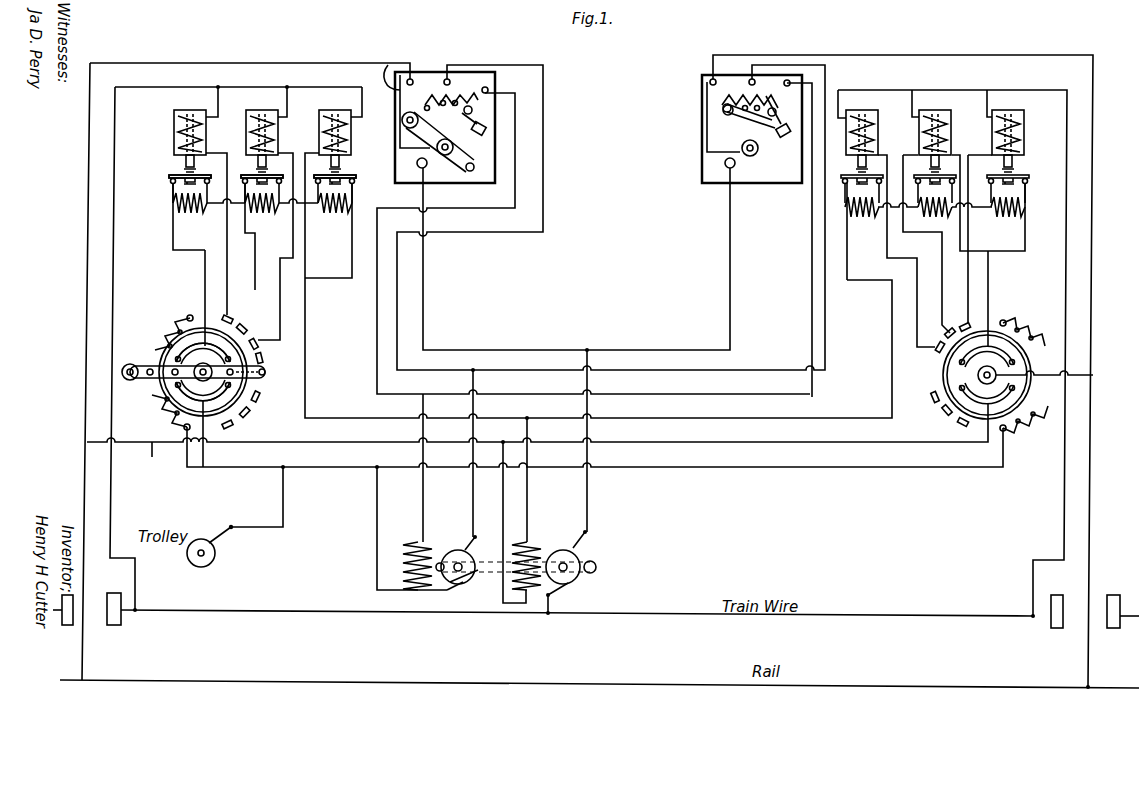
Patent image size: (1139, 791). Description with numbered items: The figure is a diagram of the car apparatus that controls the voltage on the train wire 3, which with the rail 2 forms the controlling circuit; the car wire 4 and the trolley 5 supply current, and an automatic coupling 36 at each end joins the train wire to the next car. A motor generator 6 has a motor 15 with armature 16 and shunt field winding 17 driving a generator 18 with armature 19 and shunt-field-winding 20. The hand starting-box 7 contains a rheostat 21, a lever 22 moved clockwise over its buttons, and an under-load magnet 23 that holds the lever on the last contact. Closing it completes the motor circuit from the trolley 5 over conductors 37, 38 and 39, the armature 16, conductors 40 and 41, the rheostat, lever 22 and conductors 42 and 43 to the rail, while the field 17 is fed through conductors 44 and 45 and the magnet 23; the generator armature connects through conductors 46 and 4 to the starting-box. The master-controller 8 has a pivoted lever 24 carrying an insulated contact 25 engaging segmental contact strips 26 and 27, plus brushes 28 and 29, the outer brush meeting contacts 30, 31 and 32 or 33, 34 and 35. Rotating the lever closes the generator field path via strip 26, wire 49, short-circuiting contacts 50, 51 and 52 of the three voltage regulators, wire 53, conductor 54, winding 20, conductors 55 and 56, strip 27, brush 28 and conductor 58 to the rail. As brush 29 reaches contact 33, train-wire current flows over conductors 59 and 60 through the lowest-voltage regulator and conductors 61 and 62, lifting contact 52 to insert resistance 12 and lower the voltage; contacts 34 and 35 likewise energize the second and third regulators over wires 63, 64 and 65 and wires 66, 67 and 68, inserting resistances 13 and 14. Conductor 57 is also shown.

The rail 2 is at (599, 673).
The train wire 3 is at (578, 606).
The car wire 4 is at (576, 260).
The trolley 5 is at (214, 546).
The motor generator 6 is at (513, 551).
The hand starting-box 7 is at (440, 75).
The master-controller 8 is at (578, 357).
The resistance 12 is at (335, 216).
The resistance 13 is at (262, 216).
The resistance 14 is at (190, 216).
The motor 15 is at (432, 542).
The armature 16 is at (456, 592).
The shunt field winding 17 is at (428, 166).
The generator 18 is at (572, 548).
The armature 19 is at (596, 562).
The shunt-field-winding 20 is at (532, 545).
The rheostat 21 is at (452, 82).
The lever 22 is at (588, 138).
The automatic release or under-load magnet 23 is at (626, 128).
The pivoted lever 24 is at (136, 362).
The insulated contact 25 is at (150, 380).
The segmental contact strip 26 is at (171, 329).
The segmental contact strip 27 is at (164, 417).
The brush 28 is at (203, 391).
The brush 29 is at (267, 373).
The contact 30 is at (262, 341).
The contact 31 is at (244, 324).
The contact 32 is at (231, 312).
The contact 33 is at (262, 399).
The contact 34 is at (250, 414).
The contact 35 is at (232, 427).
The automatic coupling 36 is at (576, 599).
The conductor 37 is at (289, 519).
The conductor 38 is at (630, 484).
The conductor 39 is at (372, 538).
The conductor 40 is at (495, 444).
The conductor 41 is at (545, 182).
The conductor 42 is at (389, 65).
The conductor 43 is at (196, 54).
The conductor 44 is at (427, 508).
The conductor 45 is at (452, 392).
The conductor 46 is at (592, 468).
The wire 49 is at (173, 256).
The short-circuiting contact 50 is at (218, 174).
The short-circuiting contact 51 is at (291, 174).
The short-circuiting contact 52 is at (356, 178).
The wire 53 is at (598, 286).
The conductor 54 is at (530, 512).
The conductor 55 is at (475, 516).
The conductor 56 is at (537, 423).
The conductor 57 is at (204, 450).
The conductor 58 is at (147, 461).
The conductor 59 is at (114, 268).
The conductor 60 is at (352, 114).
The conductor 61 is at (328, 230).
The conductor 62 is at (266, 357).
The wire 63 is at (279, 114).
The wire 64 is at (288, 252).
The wire 65 is at (204, 318).
The wire 66 is at (207, 114).
The wire 67 is at (251, 250).
The wire 68 is at (203, 353).